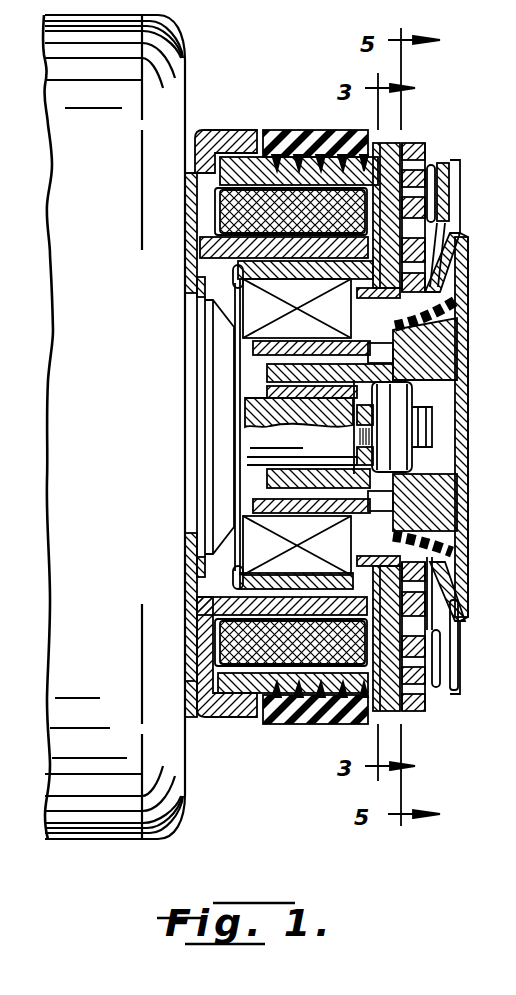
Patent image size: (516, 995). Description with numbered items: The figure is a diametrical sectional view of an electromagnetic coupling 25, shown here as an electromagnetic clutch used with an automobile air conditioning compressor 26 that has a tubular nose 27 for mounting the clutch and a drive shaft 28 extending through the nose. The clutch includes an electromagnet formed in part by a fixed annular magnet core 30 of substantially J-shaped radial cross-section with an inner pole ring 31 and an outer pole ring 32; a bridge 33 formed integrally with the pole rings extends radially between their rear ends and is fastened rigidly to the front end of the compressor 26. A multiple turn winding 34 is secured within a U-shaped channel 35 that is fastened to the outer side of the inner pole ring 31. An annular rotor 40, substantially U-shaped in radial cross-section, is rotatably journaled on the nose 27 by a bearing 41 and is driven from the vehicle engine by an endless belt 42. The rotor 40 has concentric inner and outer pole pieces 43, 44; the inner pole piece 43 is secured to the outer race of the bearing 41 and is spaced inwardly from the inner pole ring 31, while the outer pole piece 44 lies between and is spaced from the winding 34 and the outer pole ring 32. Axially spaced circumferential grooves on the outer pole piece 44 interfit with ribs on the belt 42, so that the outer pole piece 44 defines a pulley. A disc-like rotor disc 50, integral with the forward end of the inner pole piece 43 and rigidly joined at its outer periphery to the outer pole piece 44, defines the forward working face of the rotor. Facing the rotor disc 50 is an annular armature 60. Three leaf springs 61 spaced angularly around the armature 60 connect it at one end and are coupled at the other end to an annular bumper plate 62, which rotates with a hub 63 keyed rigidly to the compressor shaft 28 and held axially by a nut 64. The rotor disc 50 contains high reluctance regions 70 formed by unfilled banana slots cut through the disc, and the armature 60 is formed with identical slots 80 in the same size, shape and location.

The electromagnetic coupling 25 is at (278, 105).
The air conditioning compressor 26 is at (155, 42).
The tubular nose 27 is at (255, 346).
The drive shaft 28 is at (258, 426).
The magnet core 30 is at (194, 727).
The inner pole ring 31 is at (218, 610).
The outer pole ring 32 is at (222, 722).
The bridge 33 is at (200, 680).
The winding 34 is at (230, 668).
The U-shaped channel 35 is at (228, 616).
The rotor 40 is at (260, 568).
The bearing 41 is at (310, 525).
The endless belt 42 is at (282, 725).
The inner pole piece 43 is at (322, 576).
The outer pole piece 44 is at (230, 687).
The rotor disc 50 is at (392, 720).
The armature 60 is at (430, 700).
The leaf springs 61 is at (515, 200).
The bumper plate 62 is at (477, 250).
The hub 63 is at (408, 338).
The nut 64 is at (405, 397).
The high reluctance regions 70 is at (418, 604).
The slots 80 is at (412, 630).